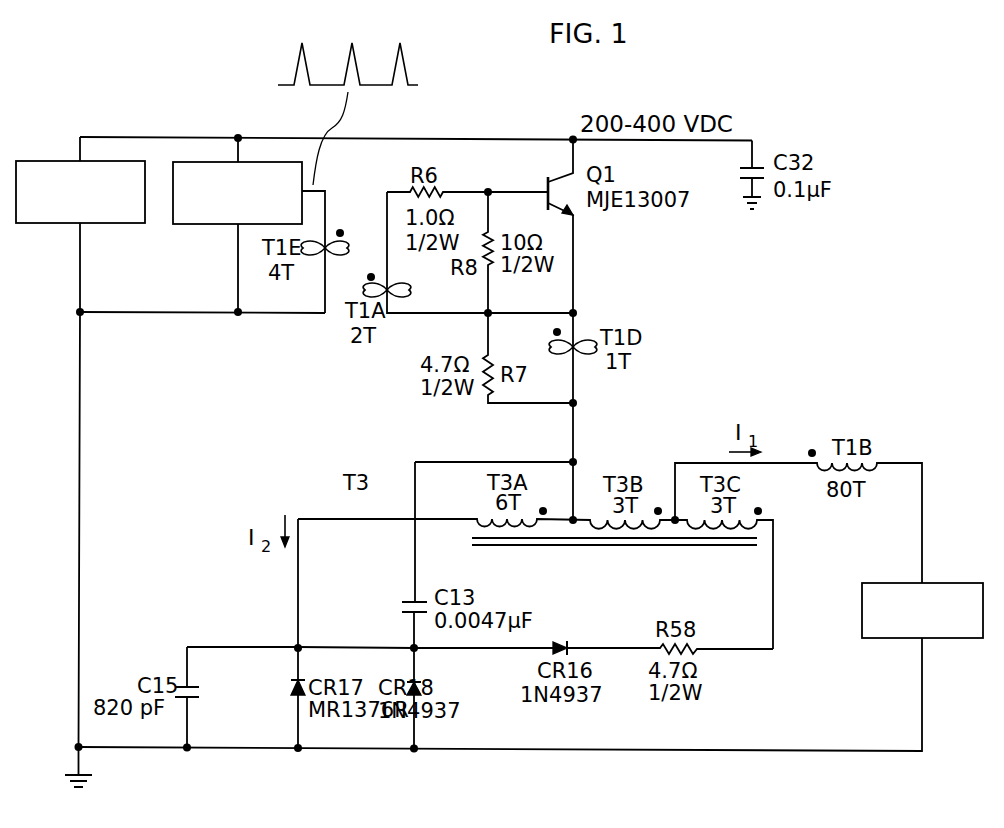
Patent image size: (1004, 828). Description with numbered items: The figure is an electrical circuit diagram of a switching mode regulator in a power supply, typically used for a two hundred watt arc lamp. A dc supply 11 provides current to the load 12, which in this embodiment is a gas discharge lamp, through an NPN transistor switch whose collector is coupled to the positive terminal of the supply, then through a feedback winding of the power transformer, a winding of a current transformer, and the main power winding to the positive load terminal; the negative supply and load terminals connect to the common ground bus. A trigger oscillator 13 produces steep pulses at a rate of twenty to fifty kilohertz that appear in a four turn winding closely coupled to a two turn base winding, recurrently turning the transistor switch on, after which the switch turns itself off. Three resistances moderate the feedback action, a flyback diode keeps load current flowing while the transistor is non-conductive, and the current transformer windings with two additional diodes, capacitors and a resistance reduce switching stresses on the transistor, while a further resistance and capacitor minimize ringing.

The dc supply 11 is at (36, 225).
The load 12 is at (970, 641).
The trigger oscillator 13 is at (198, 226).